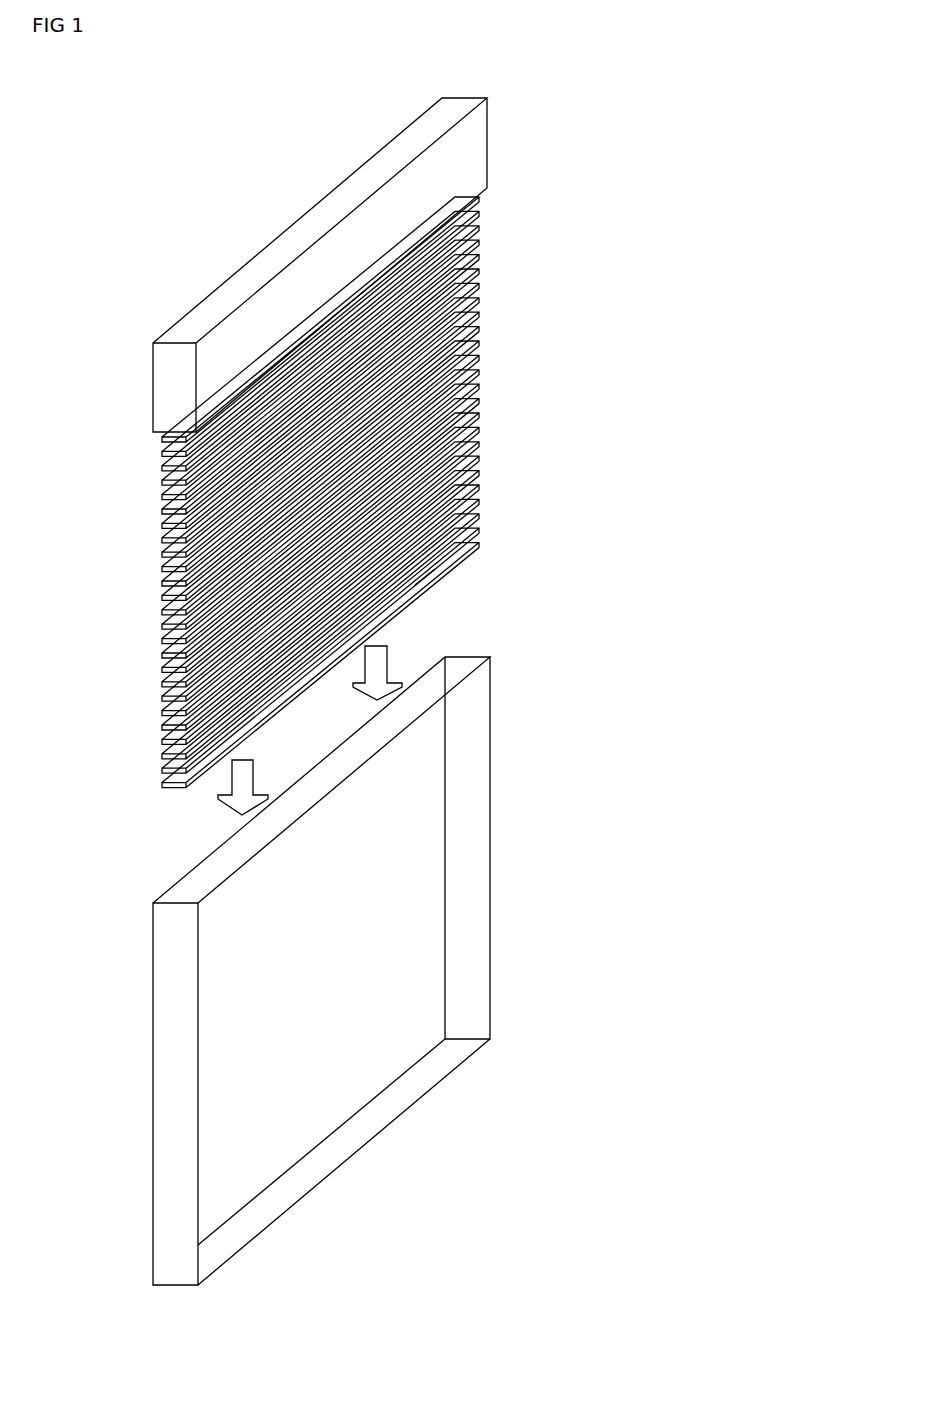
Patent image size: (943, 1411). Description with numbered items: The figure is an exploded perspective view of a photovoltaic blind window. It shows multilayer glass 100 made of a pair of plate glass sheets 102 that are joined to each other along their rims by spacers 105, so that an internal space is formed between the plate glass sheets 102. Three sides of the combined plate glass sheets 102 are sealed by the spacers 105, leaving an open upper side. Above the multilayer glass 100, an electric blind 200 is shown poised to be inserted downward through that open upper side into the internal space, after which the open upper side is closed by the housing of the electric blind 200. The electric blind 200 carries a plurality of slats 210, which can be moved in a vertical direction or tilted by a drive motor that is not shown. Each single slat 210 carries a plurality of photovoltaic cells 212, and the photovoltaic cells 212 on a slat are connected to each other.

The electric blind 200 is at (385, 443).
The slats 210 is at (479, 542).
The photovoltaic cells 212 is at (422, 582).
The multilayer glass 100 is at (336, 971).
The plate glass sheets 102 is at (183, 892).
The spacers 105 is at (167, 1067).